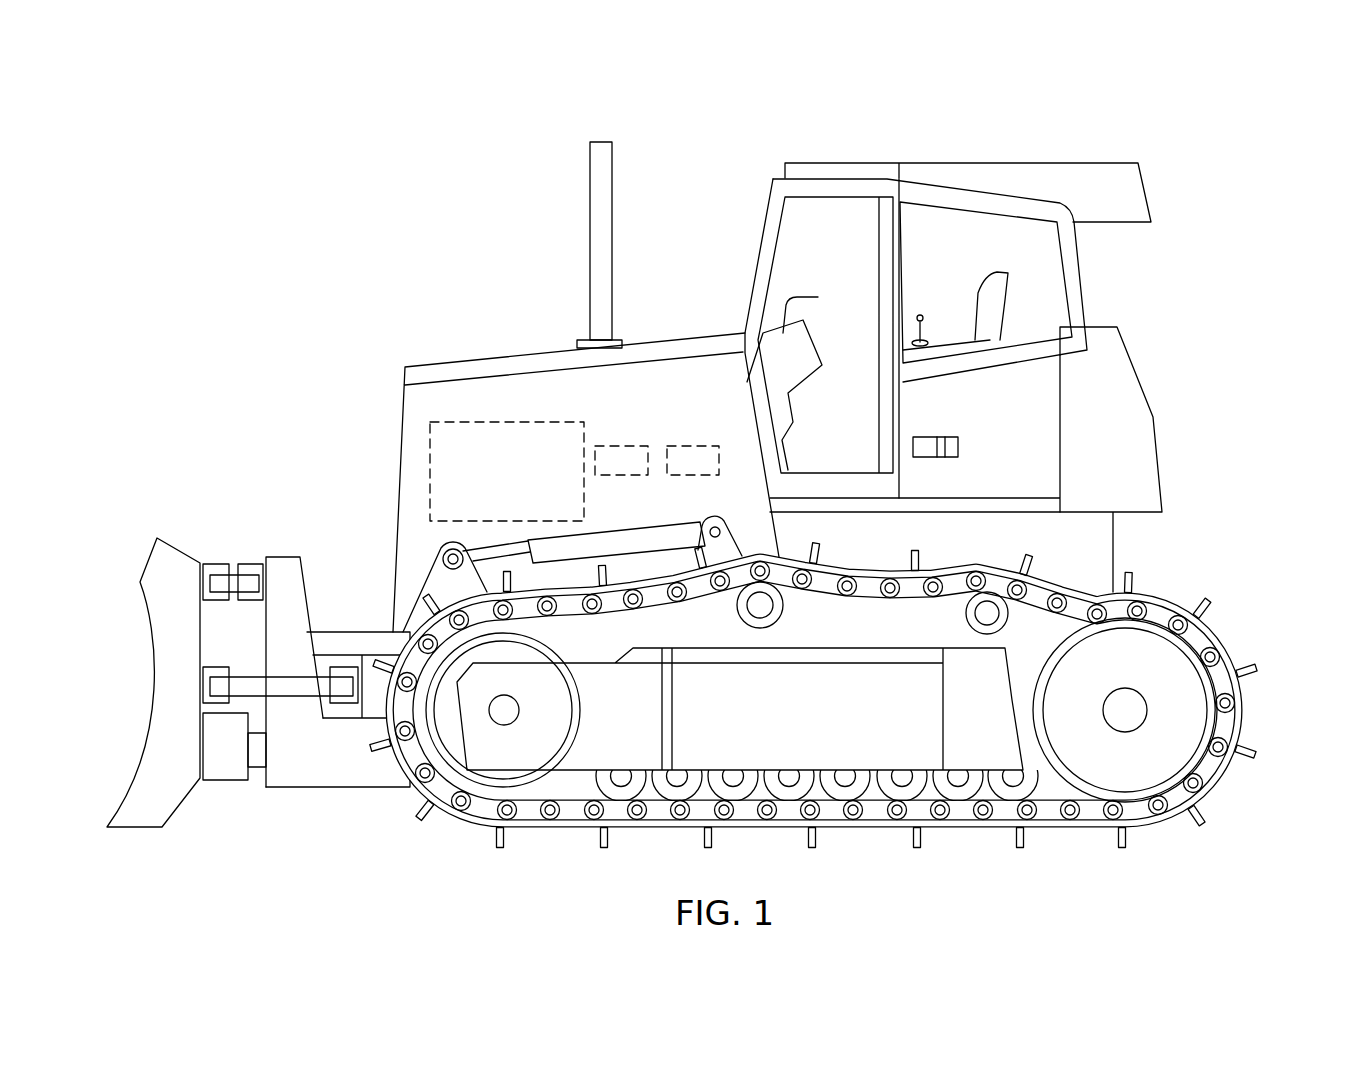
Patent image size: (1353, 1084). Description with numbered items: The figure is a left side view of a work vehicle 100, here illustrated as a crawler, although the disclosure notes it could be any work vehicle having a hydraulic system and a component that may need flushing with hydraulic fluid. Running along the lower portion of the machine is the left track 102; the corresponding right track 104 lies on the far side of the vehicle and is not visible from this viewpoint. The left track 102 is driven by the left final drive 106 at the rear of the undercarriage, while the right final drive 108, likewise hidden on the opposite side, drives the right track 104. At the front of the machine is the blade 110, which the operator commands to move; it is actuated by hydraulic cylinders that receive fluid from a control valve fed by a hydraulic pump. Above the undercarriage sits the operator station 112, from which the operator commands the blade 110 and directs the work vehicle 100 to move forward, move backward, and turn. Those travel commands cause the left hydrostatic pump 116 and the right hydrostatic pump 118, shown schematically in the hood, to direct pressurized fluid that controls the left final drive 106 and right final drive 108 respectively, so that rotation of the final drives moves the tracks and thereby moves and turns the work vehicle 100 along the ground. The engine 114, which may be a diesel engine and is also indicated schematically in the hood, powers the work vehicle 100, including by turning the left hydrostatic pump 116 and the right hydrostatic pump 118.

The work vehicle 100 is at (1212, 136).
The left track 102 is at (1235, 753).
The right track 104 is at (844, 744).
The left final drive 106 is at (1102, 747).
The right final drive 108 is at (1125, 778).
The blade 110 is at (173, 783).
The operator station 112 is at (773, 180).
The engine 114 is at (468, 443).
The left hydrostatic pump 116 is at (687, 453).
The right hydrostatic pump 118 is at (622, 452).